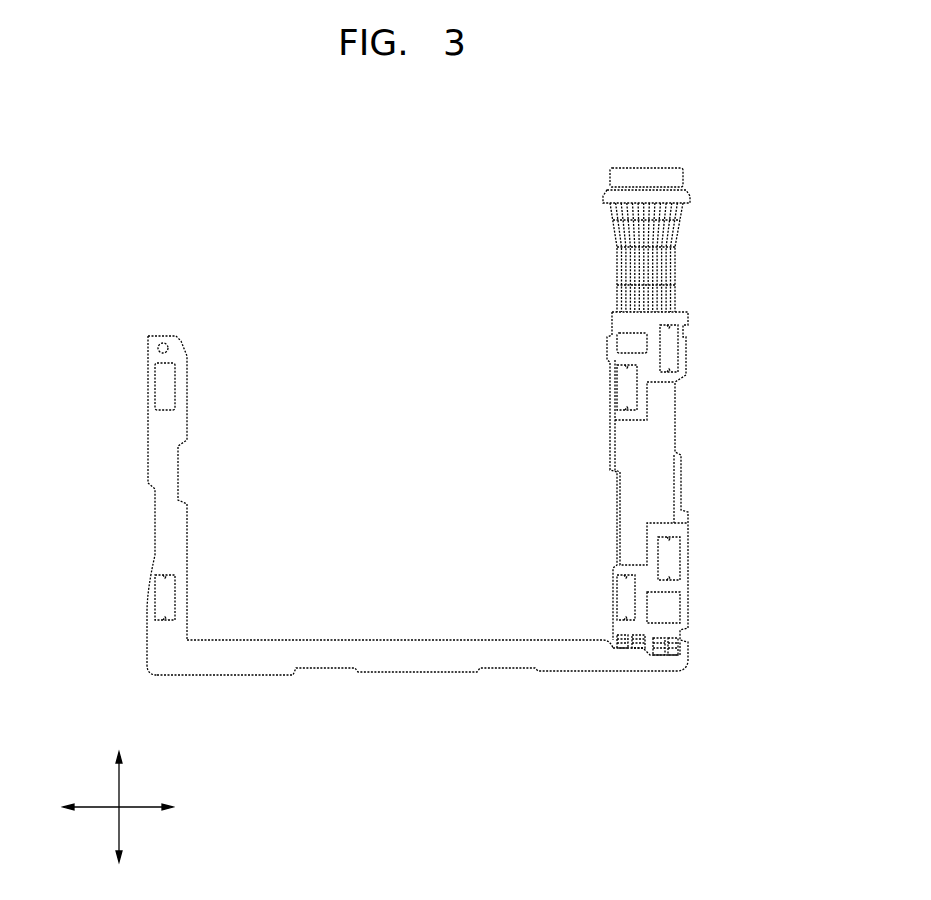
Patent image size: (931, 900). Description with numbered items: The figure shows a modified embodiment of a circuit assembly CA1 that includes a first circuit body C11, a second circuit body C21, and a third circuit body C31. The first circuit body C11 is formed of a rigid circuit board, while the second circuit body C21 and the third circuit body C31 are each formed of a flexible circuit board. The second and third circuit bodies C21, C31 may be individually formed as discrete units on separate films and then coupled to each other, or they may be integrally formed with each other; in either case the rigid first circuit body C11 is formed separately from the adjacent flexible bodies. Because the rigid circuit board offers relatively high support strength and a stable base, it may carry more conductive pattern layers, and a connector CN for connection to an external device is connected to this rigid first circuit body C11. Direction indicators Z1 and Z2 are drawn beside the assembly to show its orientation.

The circuit assembly CA1 is at (517, 471).
The first circuit body C11 is at (633, 512).
The second circuit body C21 is at (178, 535).
The third circuit body C31 is at (400, 648).
The connector CN is at (668, 266).
The first direction axis Z1 is at (135, 808).
The second direction axis Z2 is at (121, 792).